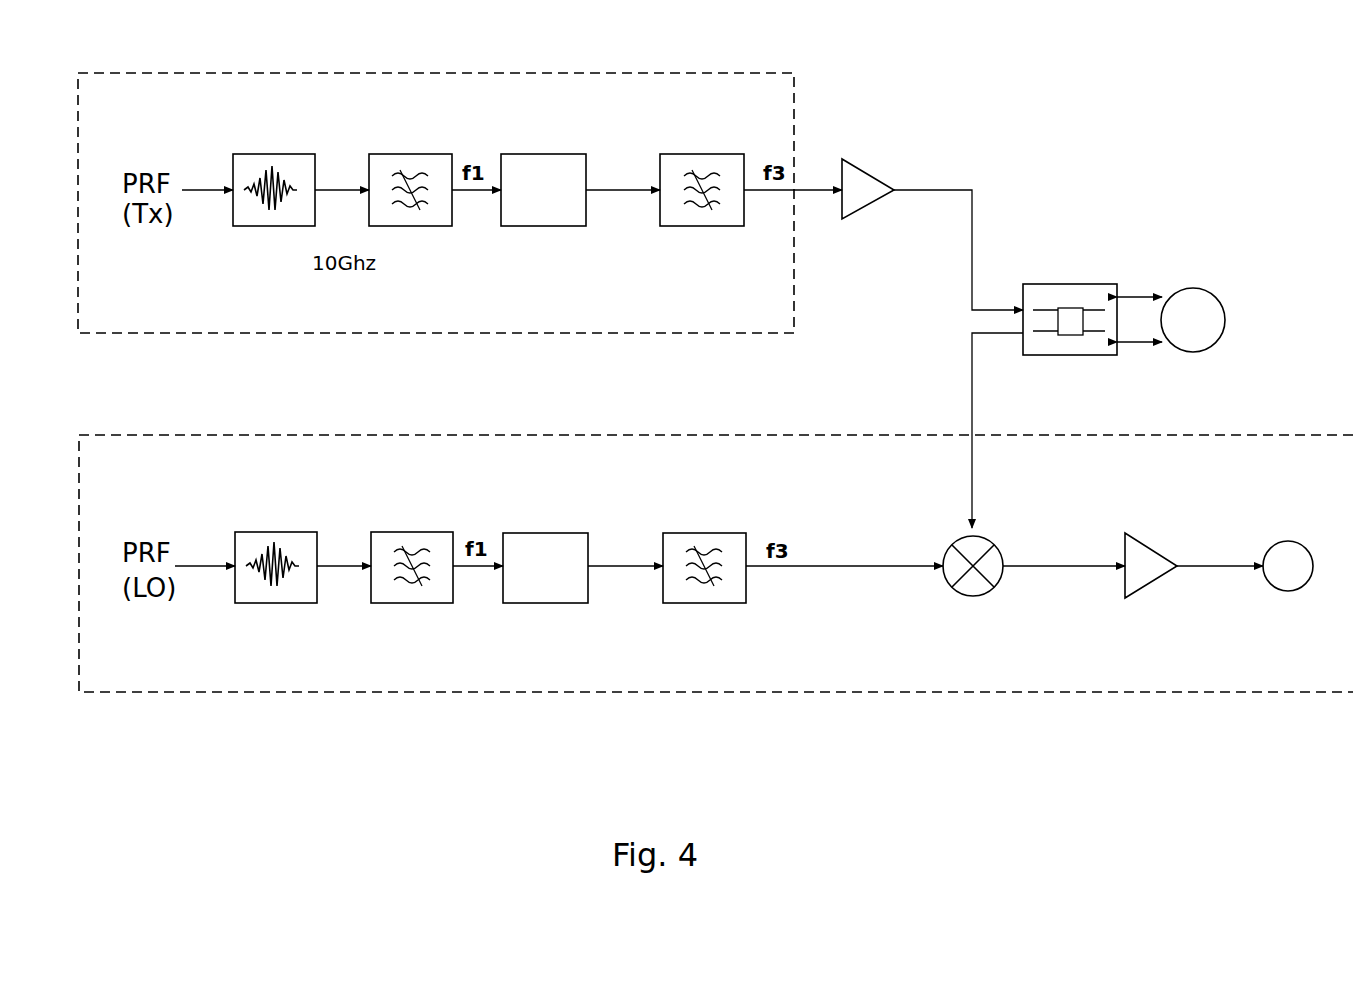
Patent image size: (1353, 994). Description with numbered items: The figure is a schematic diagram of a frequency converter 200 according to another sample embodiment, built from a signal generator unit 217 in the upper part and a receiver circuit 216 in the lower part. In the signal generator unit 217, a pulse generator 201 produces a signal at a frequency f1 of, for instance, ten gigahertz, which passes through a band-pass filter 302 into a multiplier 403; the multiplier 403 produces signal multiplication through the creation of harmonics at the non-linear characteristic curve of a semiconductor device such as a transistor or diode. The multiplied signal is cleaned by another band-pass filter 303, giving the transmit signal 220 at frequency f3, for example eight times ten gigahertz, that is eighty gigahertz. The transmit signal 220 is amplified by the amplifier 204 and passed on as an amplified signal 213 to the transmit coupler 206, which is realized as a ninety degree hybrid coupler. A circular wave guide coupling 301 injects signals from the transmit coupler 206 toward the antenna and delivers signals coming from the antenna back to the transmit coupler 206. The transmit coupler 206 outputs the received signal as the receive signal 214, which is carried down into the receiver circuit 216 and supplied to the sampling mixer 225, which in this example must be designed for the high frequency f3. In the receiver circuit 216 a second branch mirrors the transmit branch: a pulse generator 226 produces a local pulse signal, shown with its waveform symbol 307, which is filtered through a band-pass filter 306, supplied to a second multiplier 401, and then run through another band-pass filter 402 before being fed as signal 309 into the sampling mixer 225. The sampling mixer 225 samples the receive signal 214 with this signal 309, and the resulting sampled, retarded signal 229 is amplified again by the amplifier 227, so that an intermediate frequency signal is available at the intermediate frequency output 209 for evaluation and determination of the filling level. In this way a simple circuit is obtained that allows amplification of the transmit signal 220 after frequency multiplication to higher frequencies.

The frequency converter 200 is at (883, 763).
The signal generator unit 217 is at (552, 73).
The pulse generator 201 is at (269, 228).
The band-pass filter 302 is at (410, 228).
The multiplier 403 is at (572, 228).
The band-pass filter 303 is at (737, 228).
The transmit signal 220 is at (813, 185).
The amplifier 204 is at (867, 210).
The amplified signal 213 is at (972, 232).
The transmit coupler 206 is at (1070, 283).
The circular wave guide coupling 301 is at (1192, 288).
The receive signal 214 is at (972, 420).
The receiver circuit 216 is at (1138, 692).
The pulse generator 226 is at (198, 570).
The pulse generator (LO) 307 is at (273, 532).
The band-pass filter 306 is at (408, 532).
The second multiplier 401 is at (545, 533).
The band-pass filter 402 is at (697, 533).
The signal 309 is at (872, 566).
The sampling mixer 225 is at (1002, 550).
The sampled, retarded signal 229 is at (1055, 570).
The amplifier 227 is at (1153, 547).
The intermediate frequency output 209 is at (1275, 540).